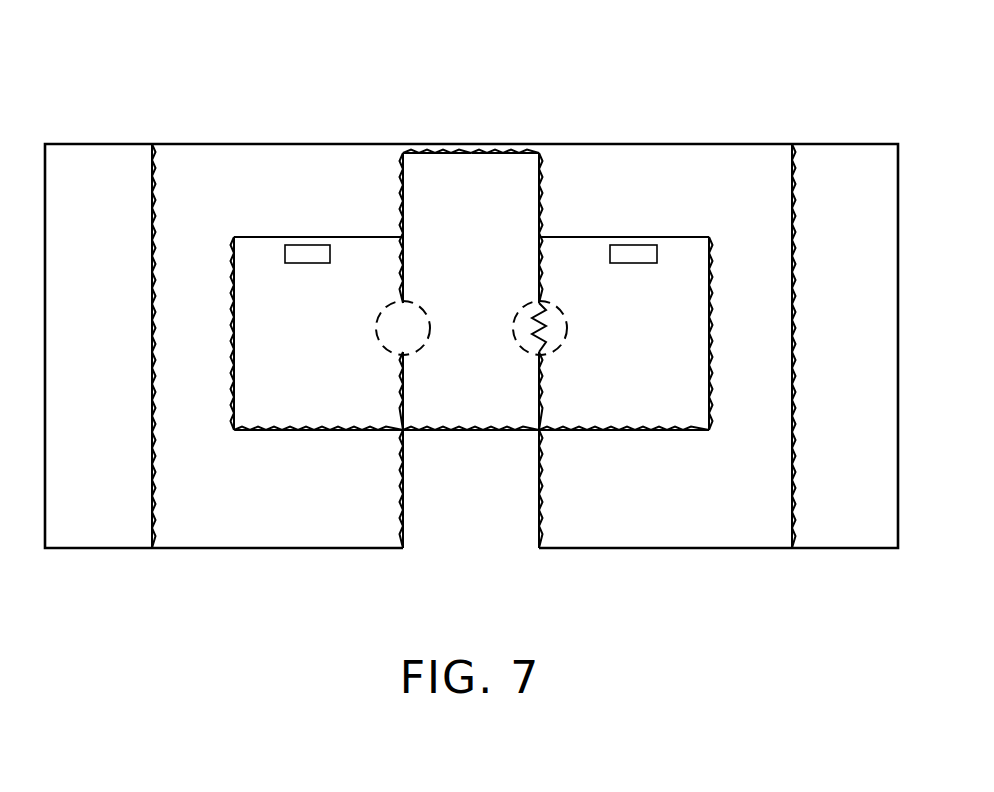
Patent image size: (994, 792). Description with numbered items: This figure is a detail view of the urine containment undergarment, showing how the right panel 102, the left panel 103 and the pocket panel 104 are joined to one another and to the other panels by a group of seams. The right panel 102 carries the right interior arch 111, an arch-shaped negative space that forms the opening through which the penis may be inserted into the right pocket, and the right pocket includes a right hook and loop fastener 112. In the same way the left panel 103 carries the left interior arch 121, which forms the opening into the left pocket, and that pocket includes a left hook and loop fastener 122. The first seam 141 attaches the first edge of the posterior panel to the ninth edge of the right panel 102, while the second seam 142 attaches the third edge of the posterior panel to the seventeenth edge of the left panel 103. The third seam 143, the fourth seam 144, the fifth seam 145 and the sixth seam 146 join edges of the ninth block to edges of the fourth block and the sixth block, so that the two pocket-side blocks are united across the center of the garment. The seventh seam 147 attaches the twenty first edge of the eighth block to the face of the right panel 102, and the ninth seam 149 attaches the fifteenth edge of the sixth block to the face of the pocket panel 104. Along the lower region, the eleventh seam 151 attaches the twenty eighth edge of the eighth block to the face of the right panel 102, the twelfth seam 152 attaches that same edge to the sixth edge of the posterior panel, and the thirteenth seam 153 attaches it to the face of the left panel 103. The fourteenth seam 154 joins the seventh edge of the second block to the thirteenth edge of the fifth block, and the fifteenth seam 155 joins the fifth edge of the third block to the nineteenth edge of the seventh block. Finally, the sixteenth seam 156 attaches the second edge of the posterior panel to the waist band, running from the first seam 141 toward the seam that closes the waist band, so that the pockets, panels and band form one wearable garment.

The right panel 102 is at (88, 528).
The left panel 103 is at (847, 520).
The pocket panel 104 is at (172, 146).
The right interior arch 111 is at (398, 322).
The right hook and loop fastener 112 is at (295, 250).
The left interior arch 121 is at (550, 327).
The left hook and loop fastener 122 is at (624, 250).
The first seam 141 is at (150, 343).
The second seam 142 is at (793, 240).
The third seam 143 is at (403, 190).
The fourth seam 144 is at (437, 153).
The fifth seam 145 is at (478, 153).
The sixth seam 146 is at (540, 195).
The seventh seam 147 is at (237, 372).
The ninth seam 149 is at (543, 400).
The eleventh seam 151 is at (303, 433).
The twelfth seam 152 is at (463, 437).
The thirteenth seam 153 is at (643, 433).
The fourteenth seam 154 is at (402, 498).
The fifteenth seam 155 is at (543, 500).
The sixteenth seam 156 is at (709, 257).